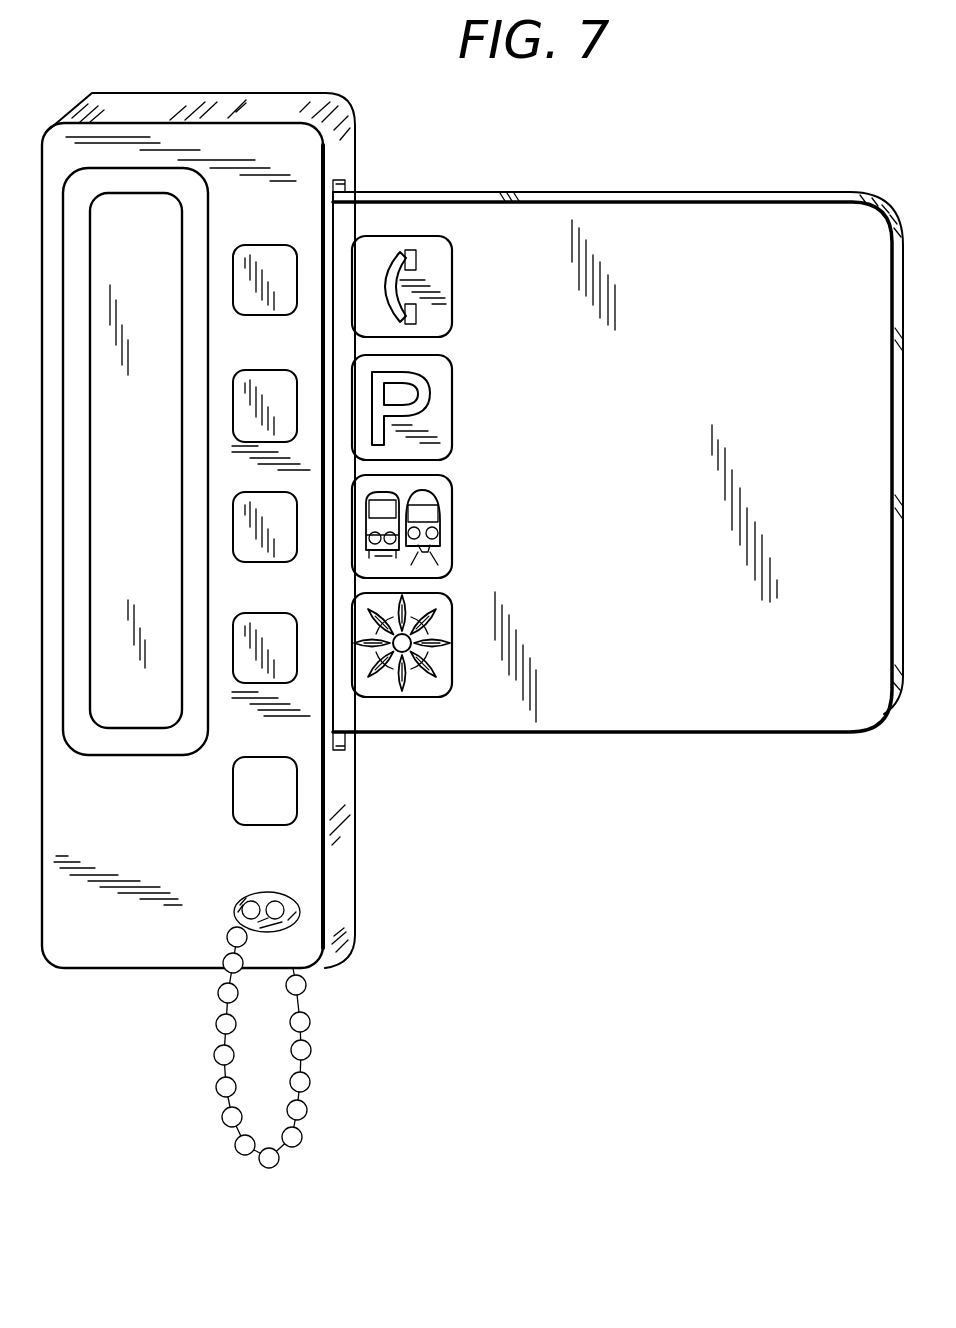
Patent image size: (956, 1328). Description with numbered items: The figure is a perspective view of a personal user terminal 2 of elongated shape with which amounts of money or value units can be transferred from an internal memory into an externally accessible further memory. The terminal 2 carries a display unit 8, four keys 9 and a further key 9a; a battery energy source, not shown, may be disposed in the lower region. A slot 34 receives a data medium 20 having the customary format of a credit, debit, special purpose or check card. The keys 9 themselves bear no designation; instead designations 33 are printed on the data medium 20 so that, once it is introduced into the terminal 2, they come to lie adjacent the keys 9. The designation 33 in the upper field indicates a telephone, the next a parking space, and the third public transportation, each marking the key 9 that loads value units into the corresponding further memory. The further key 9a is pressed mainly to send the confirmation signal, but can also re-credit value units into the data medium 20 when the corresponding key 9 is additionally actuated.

The handset housing 2 is at (236, 103).
The display unit 8 is at (140, 212).
The keys 9 is at (290, 408).
The further key 9a is at (292, 778).
The data medium 20 is at (590, 215).
The designations 33 is at (445, 258).
The slot 34 is at (347, 190).